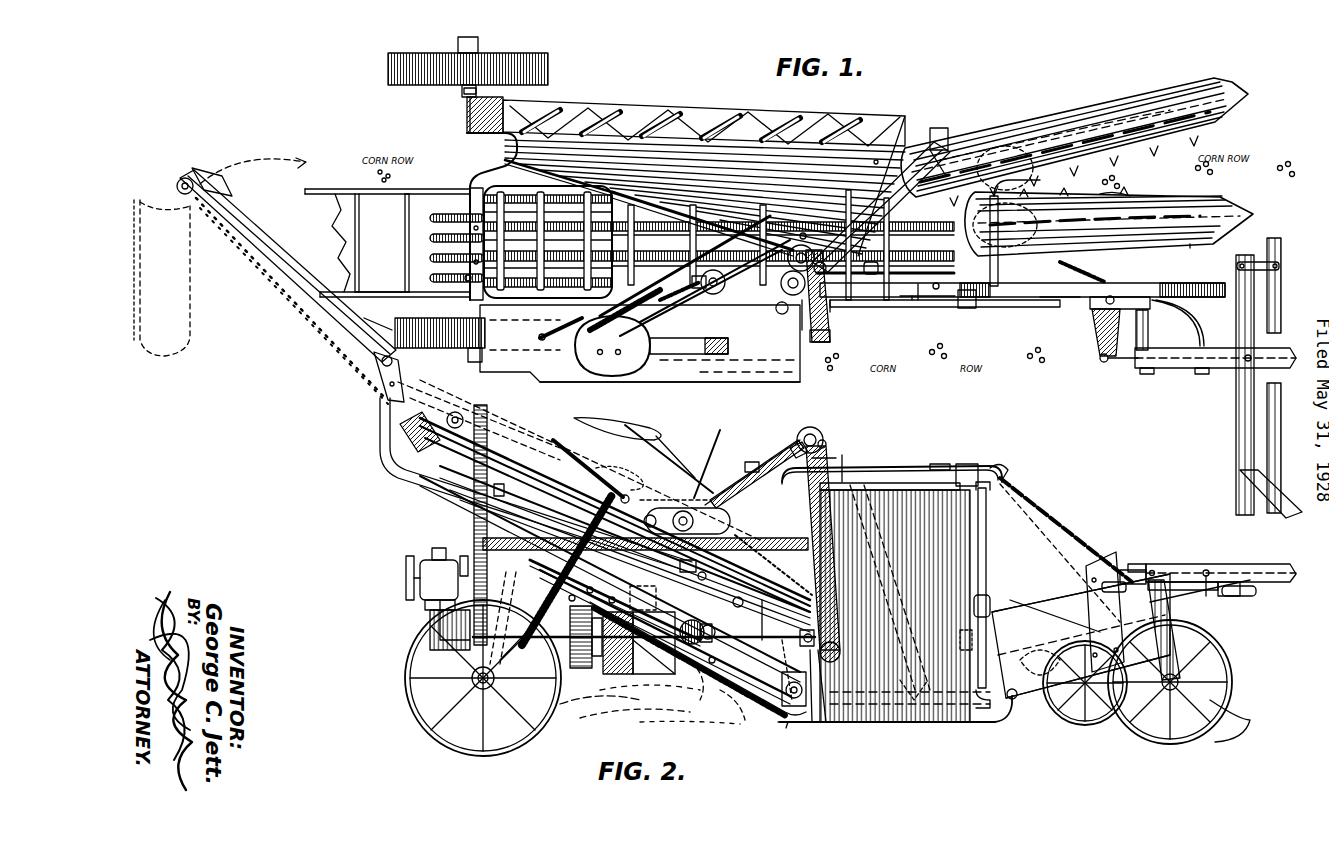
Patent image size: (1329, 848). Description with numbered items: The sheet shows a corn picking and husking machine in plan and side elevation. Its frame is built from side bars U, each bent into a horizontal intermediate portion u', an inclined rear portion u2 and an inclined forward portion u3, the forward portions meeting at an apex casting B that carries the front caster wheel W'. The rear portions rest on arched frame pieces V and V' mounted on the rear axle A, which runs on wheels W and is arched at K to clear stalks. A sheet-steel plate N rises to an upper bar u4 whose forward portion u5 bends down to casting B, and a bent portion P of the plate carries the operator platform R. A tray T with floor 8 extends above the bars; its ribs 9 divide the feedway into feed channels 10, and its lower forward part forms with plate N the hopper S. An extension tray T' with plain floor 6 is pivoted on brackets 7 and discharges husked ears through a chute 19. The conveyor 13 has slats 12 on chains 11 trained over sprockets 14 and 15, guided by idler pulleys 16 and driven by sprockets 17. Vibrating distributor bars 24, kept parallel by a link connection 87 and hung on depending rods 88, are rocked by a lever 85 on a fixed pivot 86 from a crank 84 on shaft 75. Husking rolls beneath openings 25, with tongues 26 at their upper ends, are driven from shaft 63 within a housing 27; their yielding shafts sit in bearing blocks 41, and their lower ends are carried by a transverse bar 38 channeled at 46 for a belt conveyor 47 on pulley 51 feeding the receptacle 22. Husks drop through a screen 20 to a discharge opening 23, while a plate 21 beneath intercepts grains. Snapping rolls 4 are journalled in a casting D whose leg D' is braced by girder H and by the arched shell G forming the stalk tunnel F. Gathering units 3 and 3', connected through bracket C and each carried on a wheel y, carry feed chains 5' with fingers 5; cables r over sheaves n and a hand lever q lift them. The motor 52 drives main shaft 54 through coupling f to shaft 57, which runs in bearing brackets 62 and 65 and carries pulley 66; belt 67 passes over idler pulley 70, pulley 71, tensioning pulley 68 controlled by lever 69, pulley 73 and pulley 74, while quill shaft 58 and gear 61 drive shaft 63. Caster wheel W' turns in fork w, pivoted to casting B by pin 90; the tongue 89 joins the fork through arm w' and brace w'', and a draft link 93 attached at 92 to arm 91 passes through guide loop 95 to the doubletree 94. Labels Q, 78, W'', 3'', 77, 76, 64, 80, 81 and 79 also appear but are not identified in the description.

In FIG. 1, the wheels W is at (453, 85).
In FIG. 2, the wheels W is at (459, 678).
In FIG. 1, the rear axle A is at (462, 90).
In FIG. 2, the rear axle A is at (478, 690).
In FIG. 1, the arched shell G is at (590, 142).
In FIG. 2, the arched shell G is at (676, 494).
In FIG. 1, the rigid girder H is at (666, 122).
In FIG. 1, the arched portion of axle K is at (492, 216).
In FIG. 2, the arched portion of axle K is at (512, 600).
In FIG. 1, the passageway or tunnel F is at (560, 171).
In FIG. 2, the coupling f is at (467, 569).
In FIG. 1, the extension tray T' is at (387, 253).
In FIG. 1, the sheet metal tray T is at (382, 273).
In FIG. 2, the sheet metal tray T is at (665, 632).
In FIG. 1, the endless chains 11 is at (318, 195).
In FIG. 1, the slats 12 is at (404, 212).
In FIG. 1, the end sprocket 14 is at (188, 180).
In FIG. 1, the floor of extension tray 6 is at (292, 262).
In FIG. 2, the floor of extension tray 6 is at (500, 414).
In FIG. 1, the endless conveyor 13 is at (300, 342).
In FIG. 2, the endless conveyor 13 is at (920, 686).
In FIG. 1, the chute 19 is at (176, 356).
In FIG. 1, the brackets 7 is at (378, 360).
In FIG. 1, the arched frame piece V is at (459, 229).
In FIG. 2, the arched frame piece V is at (469, 525).
In FIG. 1, the arched frame piece V' is at (558, 228).
In FIG. 2, the arched frame piece V' is at (675, 488).
In FIG. 1, the longitudinal ribs 9 is at (434, 226).
In FIG. 2, the longitudinal ribs 9 is at (842, 758).
In FIG. 1, the tongues 26 is at (444, 252).
In FIG. 1, the openings 25 is at (468, 280).
In FIG. 1, the casing Q is at (610, 376).
In FIG. 1, the platform R is at (692, 380).
In FIG. 2, the platform R is at (752, 540).
In FIG. 1, the belt 67 is at (858, 366).
In FIG. 2, the belt 67 is at (752, 460).
In FIG. 1, the lever 69 is at (560, 336).
In FIG. 2, the lever 69 is at (580, 470).
In FIG. 1, the belt tensioning pulley 68 is at (704, 296).
In FIG. 2, the belt tensioning pulley 68 is at (726, 522).
In FIG. 1, the cables r is at (735, 240).
In FIG. 2, the cables r is at (920, 571).
In FIG. 1, the hand lever q is at (730, 240).
In FIG. 2, the hand lever q is at (716, 470).
In FIG. 1, the laterally vibrating bars 24 is at (688, 232).
In FIG. 2, the laterally vibrating bars 24 is at (530, 446).
In FIG. 1, the pulley 73 is at (800, 246).
In FIG. 2, the pulley 73 is at (822, 442).
In FIG. 1, the casting D is at (791, 239).
In FIG. 1, the pulley 71 is at (786, 294).
In FIG. 2, the pulley 71 is at (812, 432).
In FIG. 1, the belt 78 is at (790, 319).
In FIG. 2, the belt 78 is at (790, 580).
In FIG. 1, the pulley 74 is at (818, 300).
In FIG. 2, the pulley 74 is at (832, 460).
In FIG. 1, the idler pulley 70 is at (826, 336).
In FIG. 2, the idler pulley 70 is at (856, 476).
In FIG. 1, the portion of plate P is at (802, 330).
In FIG. 2, the portion of plate P is at (812, 720).
In FIG. 1, the snapping rolls 4 is at (836, 258).
In FIG. 2, the snapping rolls 4 is at (864, 606).
In FIG. 1, the depending leg of casting D' is at (883, 128).
In FIG. 1, the bracket C is at (940, 130).
In FIG. 2, the bracket C is at (572, 660).
In FIG. 1, the bar u4 is at (873, 268).
In FIG. 2, the bar u4 is at (940, 458).
In FIG. 1, the link connection 87 is at (900, 296).
In FIG. 1, the corn receiving hopper S is at (838, 315).
In FIG. 1, the plate N is at (892, 304).
In FIG. 2, the plate N is at (895, 606).
In FIG. 1, the feed channels 10 is at (920, 298).
In FIG. 1, the floor 8 is at (934, 300).
In FIG. 2, the floor 8 is at (762, 600).
In FIG. 1, the crank 84 is at (965, 300).
In FIG. 2, the crank 84 is at (970, 464).
In FIG. 1, the shaft 75 is at (912, 300).
In FIG. 1, the beam W'' is at (1025, 308).
In FIG. 1, the unit 3 is at (1074, 140).
In FIG. 2, the unit 3 is at (1081, 636).
In FIG. 1, the wheel y is at (1068, 148).
In FIG. 2, the wheel y is at (1085, 683).
In FIG. 1, the fingers 5 is at (1109, 207).
In FIG. 1, the endless feed chain 5' is at (1127, 177).
In FIG. 1, the unit 3' is at (1198, 261).
In FIG. 2, the unit 3' is at (1200, 624).
In FIG. 1, the pipe 3'' is at (1015, 233).
In FIG. 1, the upwardly inclined forward portion u3 is at (1086, 270).
In FIG. 2, the upwardly inclined forward portion u3 is at (1012, 700).
In FIG. 1, the apex casting B is at (1110, 296).
In FIG. 2, the apex casting B is at (1122, 572).
In FIG. 1, the forward portion of bar u5 is at (1054, 301).
In FIG. 2, the forward portion of bar u5 is at (1050, 520).
In FIG. 1, the upright pivot pin 90 is at (1092, 310).
In FIG. 2, the upright pivot pin 90 is at (1140, 566).
In FIG. 1, the arm 91 is at (1092, 338).
In FIG. 2, the arm 91 is at (1104, 584).
In FIG. 1, the lateral arm w' is at (1133, 330).
In FIG. 1, the brace member w'' is at (1178, 323).
In FIG. 1, the connection 92 is at (1104, 364).
In FIG. 2, the connection 92 is at (1112, 568).
In FIG. 1, the draft link 93 is at (1126, 364).
In FIG. 2, the draft link 93 is at (1204, 590).
In FIG. 1, the tongue 89 is at (1178, 368).
In FIG. 2, the tongue 89 is at (1186, 564).
In FIG. 1, the doubletree 94 is at (1242, 378).
In FIG. 2, the doubletree 94 is at (1242, 598).
In FIG. 2, the main drive shaft 54 is at (556, 583).
In FIG. 2, the motor 52 is at (430, 600).
In FIG. 2, the side bars U is at (372, 448).
In FIG. 2, the discharge opening 23 is at (740, 706).
In FIG. 2, the housing 27 is at (410, 430).
In FIG. 2, the idler pulleys 16 is at (456, 418).
In FIG. 2, the screen 20 is at (432, 500).
In FIG. 2, the plate 21 is at (456, 520).
In FIG. 2, the shaft 63 is at (500, 496).
In FIG. 2, the chain 77 is at (750, 480).
In FIG. 2, the hub 76 is at (800, 446).
In FIG. 2, the sheaves n is at (1000, 466).
In FIG. 2, the pulley 66 is at (800, 612).
In FIG. 2, the lever 85 is at (988, 572).
In FIG. 2, the fixed pivot 86 is at (992, 600).
In FIG. 2, the depending rods 88 is at (964, 640).
In FIG. 2, the end sprocket 15 is at (990, 722).
In FIG. 2, the guide loop 95 is at (1238, 596).
In FIG. 2, the fork w is at (1171, 635).
In FIG. 2, the caster wheel W' is at (1179, 690).
In FIG. 2, the quill shaft 58 is at (582, 668).
In FIG. 2, the gear 61 is at (622, 660).
In FIG. 2, the receptacle 22 is at (658, 676).
In FIG. 2, the rockable bearing blocks 41 is at (649, 603).
In FIG. 2, the transverse bar 38 is at (622, 588).
In FIG. 2, the pulley 51 is at (650, 606).
In FIG. 2, the upwardly inclined rear portion u2 is at (572, 604).
In FIG. 2, the channel 46 is at (690, 566).
In FIG. 2, the endless belt conveyor 47 is at (706, 572).
In FIG. 2, the bearing 64 is at (738, 598).
In FIG. 2, the bearing bracket 62 is at (720, 618).
In FIG. 2, the shaft 57 is at (720, 649).
In FIG. 2, the bearing bracket 65 is at (768, 648).
In FIG. 2, the sprockets 17 is at (776, 688).
In FIG. 2, the bearing 80 is at (798, 714).
In FIG. 2, the bolt 81 is at (778, 724).
In FIG. 2, the horizontal intermediate portion u' is at (792, 745).
In FIG. 2, the rod 79 is at (826, 720).